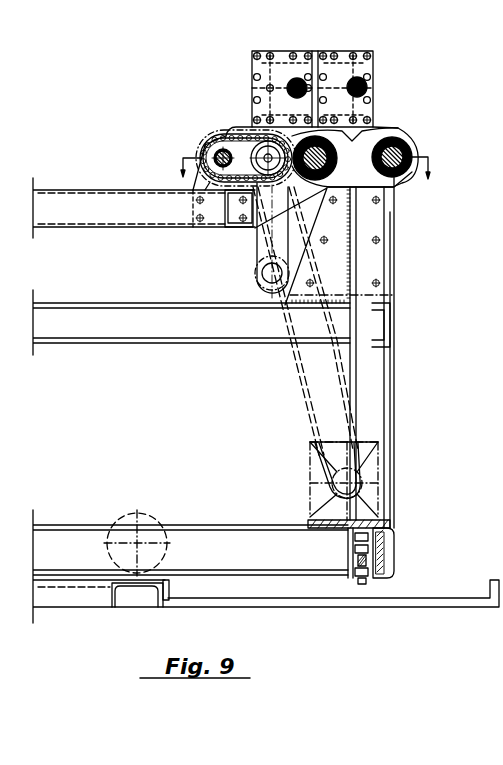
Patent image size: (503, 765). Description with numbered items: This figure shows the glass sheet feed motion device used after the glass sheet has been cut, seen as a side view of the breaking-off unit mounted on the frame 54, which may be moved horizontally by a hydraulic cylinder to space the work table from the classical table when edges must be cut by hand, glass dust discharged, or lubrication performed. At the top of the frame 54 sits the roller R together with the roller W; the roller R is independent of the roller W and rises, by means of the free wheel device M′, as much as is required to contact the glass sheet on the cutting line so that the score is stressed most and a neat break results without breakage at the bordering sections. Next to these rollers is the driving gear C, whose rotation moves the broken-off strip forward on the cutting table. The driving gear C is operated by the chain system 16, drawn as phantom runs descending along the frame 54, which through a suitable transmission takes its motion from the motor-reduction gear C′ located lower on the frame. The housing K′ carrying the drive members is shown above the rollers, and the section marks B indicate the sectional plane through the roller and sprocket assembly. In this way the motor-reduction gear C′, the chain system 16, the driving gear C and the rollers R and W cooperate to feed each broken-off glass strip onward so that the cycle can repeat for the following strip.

The gear box K' is at (325, 89).
The free wheel device M' is at (164, 122).
The driving gear C is at (234, 138).
The roller W is at (218, 142).
The section line B- B is at (306, 162).
The roller R is at (337, 154).
The chain system 16 is at (298, 382).
The frame 54 is at (378, 404).
The motor-reduction gear C' is at (369, 481).